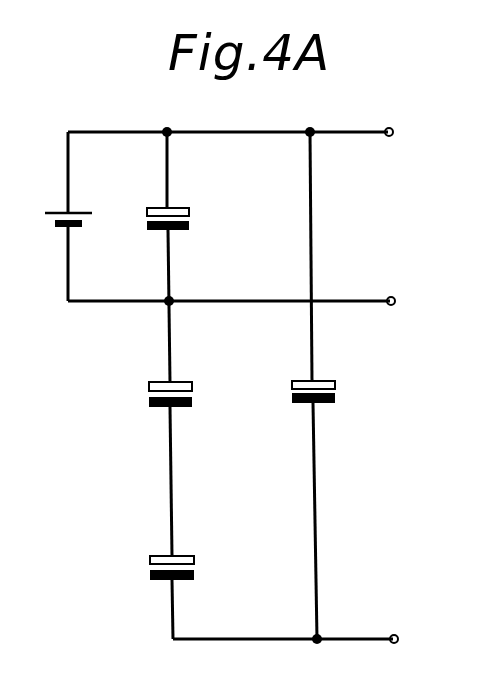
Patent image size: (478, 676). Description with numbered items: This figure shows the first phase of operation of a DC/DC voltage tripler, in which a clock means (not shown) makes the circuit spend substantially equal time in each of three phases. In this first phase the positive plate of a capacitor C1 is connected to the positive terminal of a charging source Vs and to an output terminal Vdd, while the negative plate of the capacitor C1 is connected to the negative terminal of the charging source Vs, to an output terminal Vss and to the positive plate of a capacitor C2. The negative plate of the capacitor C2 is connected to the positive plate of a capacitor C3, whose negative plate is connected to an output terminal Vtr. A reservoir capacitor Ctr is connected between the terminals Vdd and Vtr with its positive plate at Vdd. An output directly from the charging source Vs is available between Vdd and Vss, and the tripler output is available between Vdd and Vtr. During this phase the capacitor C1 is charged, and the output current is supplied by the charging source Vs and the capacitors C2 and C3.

The charging source Vs is at (80, 213).
The capacitor C1 is at (175, 208).
The capacitor C2 is at (178, 407).
The capacitor C3 is at (178, 556).
The reservoir capacitor Ctr is at (322, 403).
The output terminal Vdd is at (413, 132).
The output terminal Vss is at (412, 301).
The output terminal Vtr is at (414, 638).